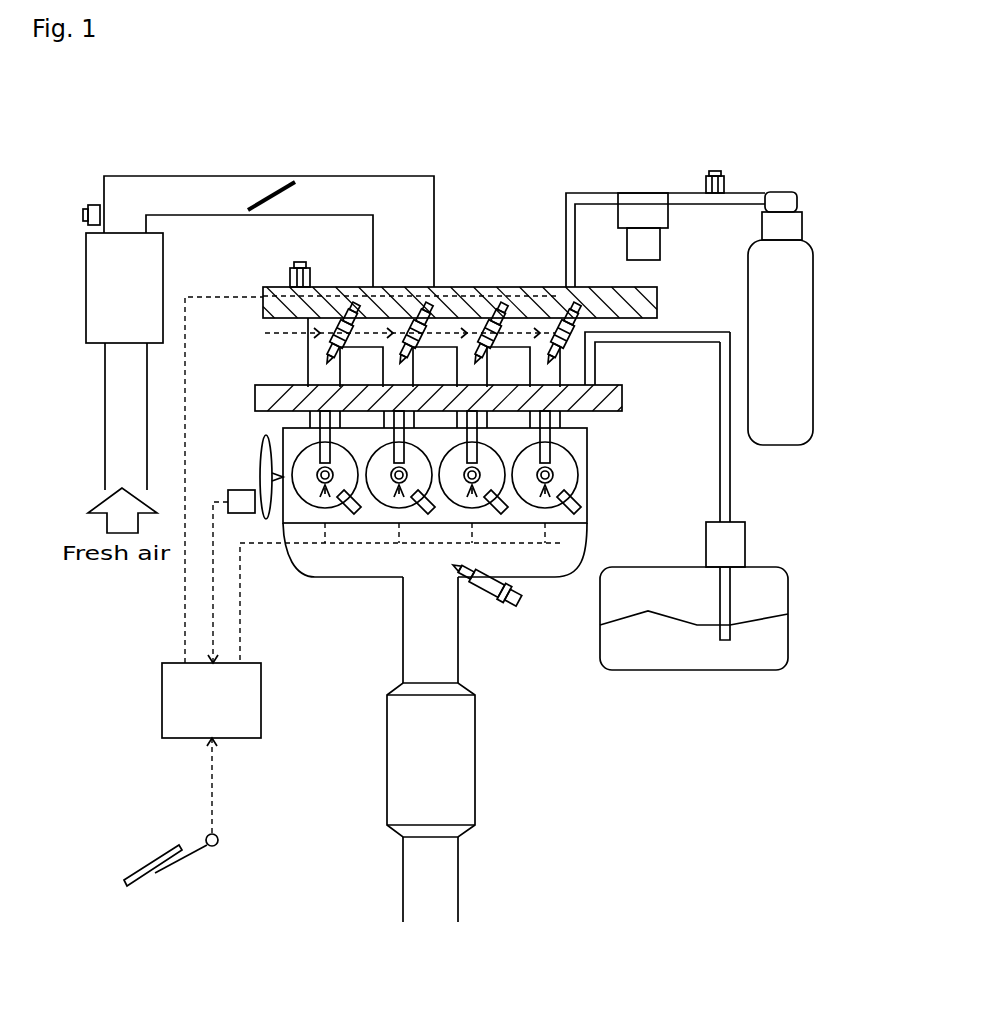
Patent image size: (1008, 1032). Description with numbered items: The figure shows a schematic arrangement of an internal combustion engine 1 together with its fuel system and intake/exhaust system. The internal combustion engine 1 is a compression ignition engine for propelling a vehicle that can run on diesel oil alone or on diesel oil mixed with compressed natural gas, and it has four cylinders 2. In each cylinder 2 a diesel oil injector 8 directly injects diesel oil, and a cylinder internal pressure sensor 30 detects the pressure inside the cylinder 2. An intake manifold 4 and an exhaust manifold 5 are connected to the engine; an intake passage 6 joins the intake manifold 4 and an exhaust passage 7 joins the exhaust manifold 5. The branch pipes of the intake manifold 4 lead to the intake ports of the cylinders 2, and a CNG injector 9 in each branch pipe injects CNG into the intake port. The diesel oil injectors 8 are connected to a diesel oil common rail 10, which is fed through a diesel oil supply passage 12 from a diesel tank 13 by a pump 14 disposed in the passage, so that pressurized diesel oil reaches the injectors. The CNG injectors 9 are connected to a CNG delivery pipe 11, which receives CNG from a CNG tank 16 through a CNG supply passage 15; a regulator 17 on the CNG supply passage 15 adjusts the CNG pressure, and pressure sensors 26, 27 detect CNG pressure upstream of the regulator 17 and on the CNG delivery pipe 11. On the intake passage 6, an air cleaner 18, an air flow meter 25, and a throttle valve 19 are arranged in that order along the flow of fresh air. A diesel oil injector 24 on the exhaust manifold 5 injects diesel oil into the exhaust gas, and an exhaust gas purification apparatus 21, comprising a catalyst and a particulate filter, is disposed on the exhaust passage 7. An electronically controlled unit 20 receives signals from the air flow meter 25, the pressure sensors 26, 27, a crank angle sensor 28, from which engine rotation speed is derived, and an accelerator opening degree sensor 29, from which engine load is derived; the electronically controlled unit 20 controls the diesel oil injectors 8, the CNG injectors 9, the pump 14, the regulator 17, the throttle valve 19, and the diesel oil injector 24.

The internal combustion engine 1 is at (300, 424).
The cylinder 2 is at (575, 442).
The intake manifold 4 is at (305, 358).
The exhaust manifold 5 is at (363, 577).
The intake passage 6 is at (340, 176).
The exhaust passage 7 is at (403, 883).
The diesel oil injector 8 is at (565, 467).
The CNG injector 9 is at (565, 352).
The diesel oil common rail 10 is at (622, 396).
The CNG delivery pipe 11 is at (657, 300).
The diesel oil supply passage 12 is at (720, 452).
The diesel tank 13 is at (675, 670).
The pump 14 is at (742, 522).
The CNG supply passage 15 is at (598, 193).
The CNG tank 16 is at (813, 305).
The regulator 17 is at (668, 214).
The air cleaner 18 is at (86, 282).
The throttle valve 19 is at (276, 182).
The electronically controlled unit 20 is at (162, 700).
The exhaust gas purification apparatus 21 is at (383, 745).
The diesel oil injector 24 is at (513, 607).
The air flow meter 25 is at (99, 205).
The pressure sensor 26 is at (712, 171).
The pressure sensor 27 is at (291, 268).
The crank angle sensor 28 is at (243, 490).
The accelerator opening degree sensor 29 is at (219, 838).
The cylinder internal pressure sensor 30 is at (590, 498).